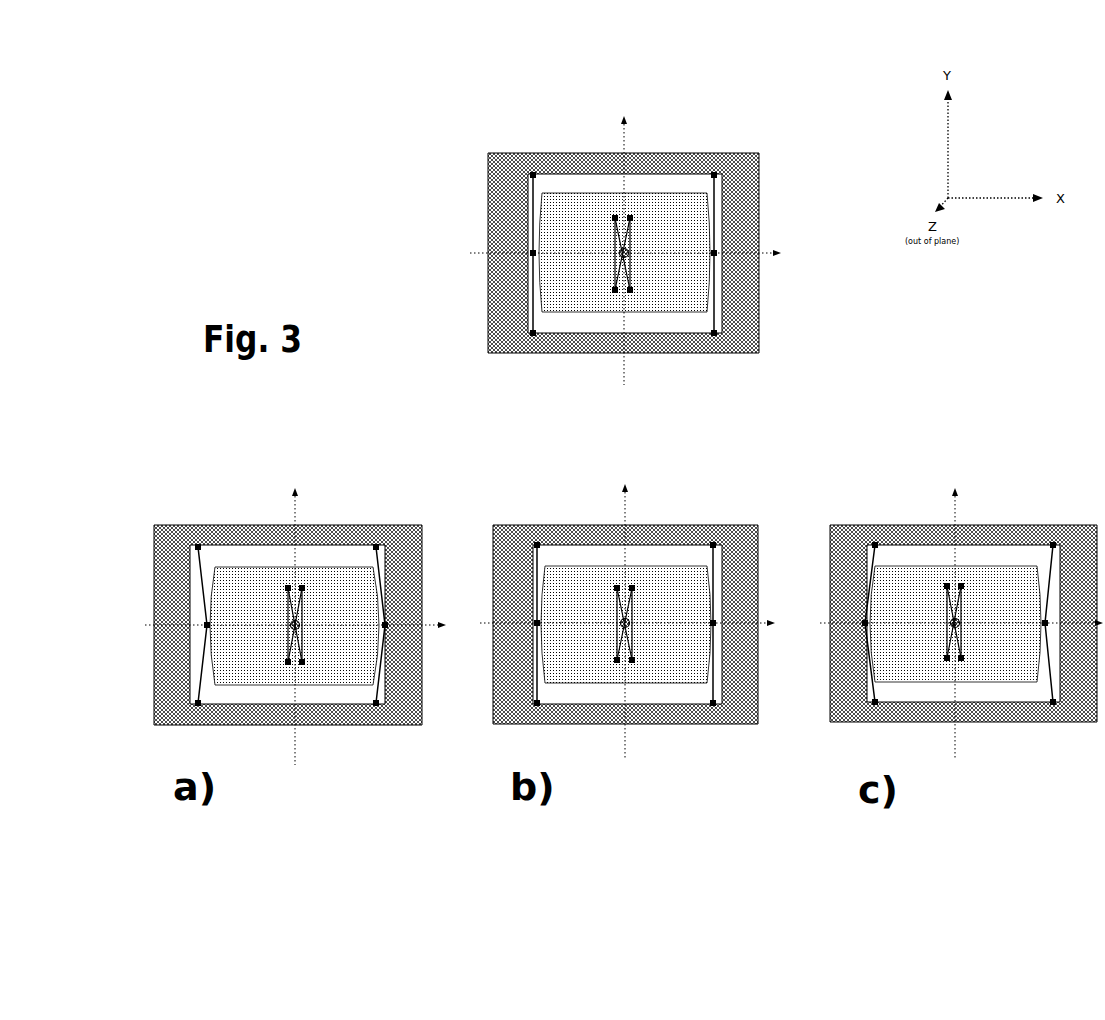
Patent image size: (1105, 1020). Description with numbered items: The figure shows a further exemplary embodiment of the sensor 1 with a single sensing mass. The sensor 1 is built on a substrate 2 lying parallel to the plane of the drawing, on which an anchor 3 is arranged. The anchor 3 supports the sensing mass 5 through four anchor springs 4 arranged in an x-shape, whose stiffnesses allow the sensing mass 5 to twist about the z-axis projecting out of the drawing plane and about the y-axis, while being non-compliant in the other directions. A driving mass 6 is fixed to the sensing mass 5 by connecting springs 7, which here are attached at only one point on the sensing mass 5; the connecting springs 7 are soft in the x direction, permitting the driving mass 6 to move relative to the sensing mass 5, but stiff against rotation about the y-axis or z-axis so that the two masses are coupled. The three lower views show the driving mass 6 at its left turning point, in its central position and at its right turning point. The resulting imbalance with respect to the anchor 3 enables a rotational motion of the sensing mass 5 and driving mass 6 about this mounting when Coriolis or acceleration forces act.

The sensor 1 is at (487, 228).
The substrate 2 is at (582, 134).
The anchor 3 is at (626, 252).
The anchor springs 4 is at (634, 216).
The sensing mass 5 is at (700, 260).
The driving mass 6 is at (488, 155).
The connecting springs 7 is at (716, 219).